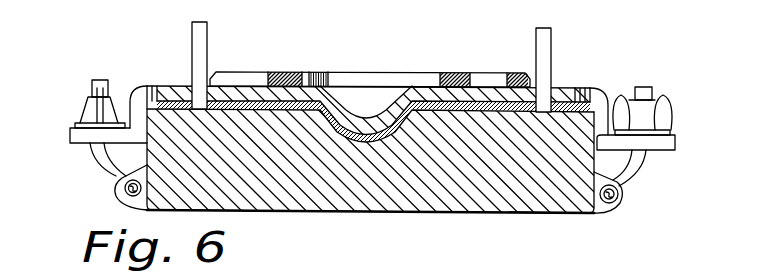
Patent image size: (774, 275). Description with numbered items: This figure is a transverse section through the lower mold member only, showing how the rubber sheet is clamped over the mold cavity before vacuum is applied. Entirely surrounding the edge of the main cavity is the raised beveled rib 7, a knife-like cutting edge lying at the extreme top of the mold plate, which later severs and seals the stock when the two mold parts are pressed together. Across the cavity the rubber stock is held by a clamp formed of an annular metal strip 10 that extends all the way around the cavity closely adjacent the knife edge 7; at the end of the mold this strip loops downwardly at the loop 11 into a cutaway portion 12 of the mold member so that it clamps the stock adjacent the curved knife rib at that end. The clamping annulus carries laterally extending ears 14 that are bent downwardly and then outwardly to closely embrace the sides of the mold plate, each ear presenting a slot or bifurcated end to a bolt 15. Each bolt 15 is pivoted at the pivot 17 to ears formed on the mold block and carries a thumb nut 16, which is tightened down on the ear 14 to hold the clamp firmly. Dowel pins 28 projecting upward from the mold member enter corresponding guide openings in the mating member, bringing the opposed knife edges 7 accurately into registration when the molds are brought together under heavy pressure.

The raised beveled rib 7 is at (245, 72).
The annular metal strip 10 is at (472, 74).
The downward loop 11 is at (345, 116).
The cutaway portion 12 is at (387, 135).
The laterally extending ears 14 is at (82, 133).
The bolt 15 is at (107, 162).
The thumb nut 16 is at (88, 113).
The pivot 17 is at (620, 189).
The dowel pins 28 is at (200, 44).